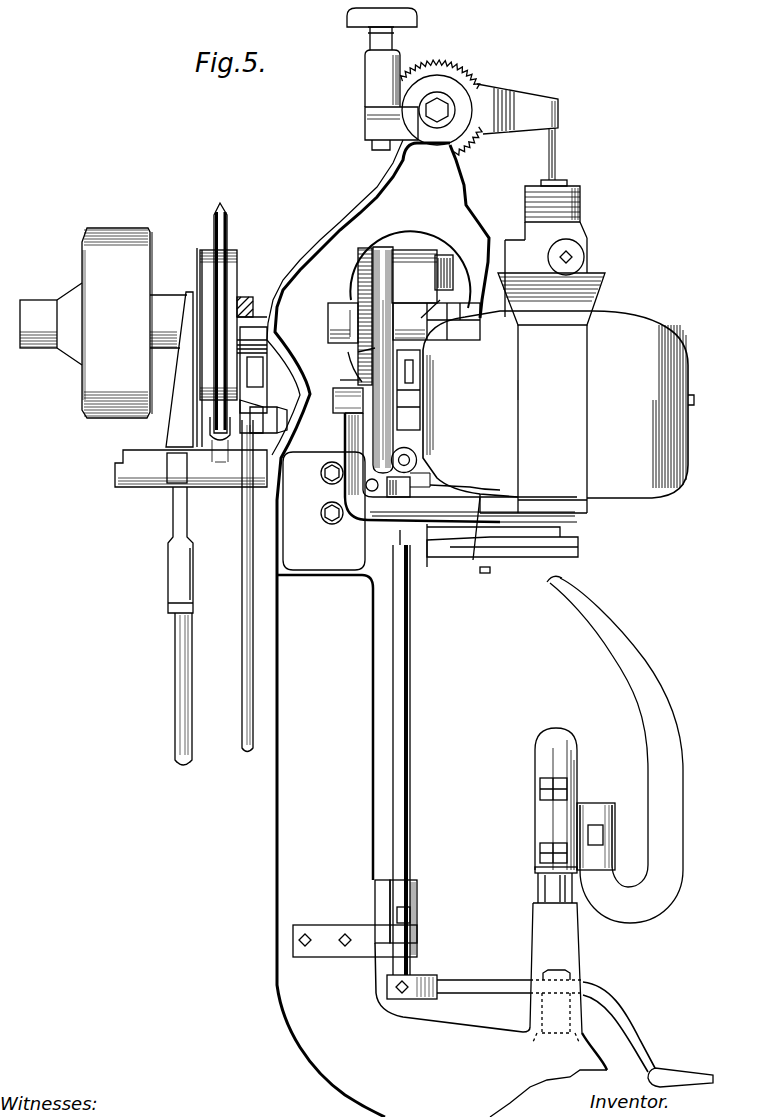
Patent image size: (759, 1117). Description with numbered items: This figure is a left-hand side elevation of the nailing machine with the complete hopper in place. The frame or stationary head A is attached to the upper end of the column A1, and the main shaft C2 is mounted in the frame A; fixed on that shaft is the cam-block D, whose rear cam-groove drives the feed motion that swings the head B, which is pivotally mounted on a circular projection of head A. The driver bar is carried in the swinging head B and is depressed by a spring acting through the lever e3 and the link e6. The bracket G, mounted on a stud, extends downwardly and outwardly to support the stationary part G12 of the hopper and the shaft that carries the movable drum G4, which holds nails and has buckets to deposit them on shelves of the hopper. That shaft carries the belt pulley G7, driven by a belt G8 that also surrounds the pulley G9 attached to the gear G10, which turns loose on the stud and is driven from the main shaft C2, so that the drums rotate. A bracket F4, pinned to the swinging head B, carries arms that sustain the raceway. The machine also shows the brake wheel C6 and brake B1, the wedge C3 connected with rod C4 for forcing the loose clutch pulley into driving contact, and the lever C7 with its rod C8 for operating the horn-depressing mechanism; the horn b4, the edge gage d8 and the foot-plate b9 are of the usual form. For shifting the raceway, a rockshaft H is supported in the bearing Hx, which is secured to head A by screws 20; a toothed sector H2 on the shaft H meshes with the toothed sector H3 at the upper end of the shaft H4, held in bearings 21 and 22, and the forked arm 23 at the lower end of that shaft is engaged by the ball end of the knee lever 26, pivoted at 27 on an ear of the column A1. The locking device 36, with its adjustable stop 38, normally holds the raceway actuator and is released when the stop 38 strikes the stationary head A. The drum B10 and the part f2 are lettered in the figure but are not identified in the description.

The frame A is at (354, 210).
The column A1 is at (276, 798).
The swinging head B is at (580, 235).
The brake B1 is at (217, 450).
The drum pulley B10 is at (88, 219).
The main shaft C2 is at (245, 295).
The wedge C3 is at (183, 295).
The rod C4 is at (178, 657).
The brake wheel C6 is at (219, 232).
The lever C7 is at (260, 330).
The rod C8 is at (247, 532).
The cam-block D is at (424, 250).
The lever e3 is at (528, 100).
The link e6 is at (557, 166).
The block f2 is at (447, 255).
The bracket G is at (421, 318).
The movable drum G4 is at (676, 365).
The belt pulley G7 is at (363, 430).
The belt G8 is at (375, 348).
The pulley G9 is at (339, 385).
The gear G10 is at (358, 255).
The stationary part of the hopper G12 is at (604, 294).
The rockshaft H is at (417, 452).
The toothed sector H2 is at (418, 473).
The toothed sector H3 is at (430, 487).
The shaft H4 is at (404, 767).
The bearing Hx is at (324, 511).
The bracket F4 is at (478, 500).
The horn b4 is at (573, 612).
The foot-plate b9 is at (578, 548).
The edge gage d8 is at (549, 560).
The screws 20 is at (299, 481).
The bearing 21 is at (390, 572).
The bearing 22 is at (418, 946).
The forked arm 23 is at (420, 975).
The knee lever 26 is at (575, 1023).
The pivot 27 is at (567, 970).
The locking device 36 is at (371, 501).
The adjustable stop 38 is at (367, 488).